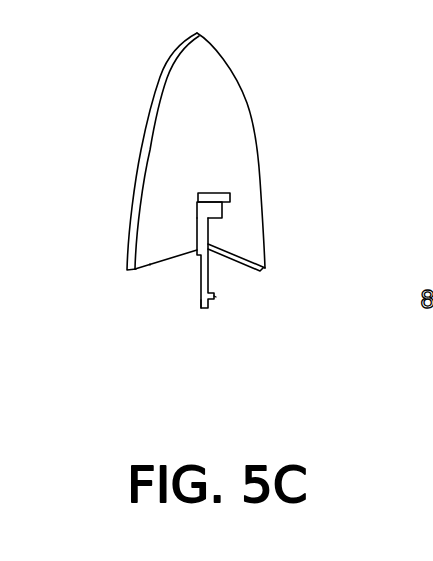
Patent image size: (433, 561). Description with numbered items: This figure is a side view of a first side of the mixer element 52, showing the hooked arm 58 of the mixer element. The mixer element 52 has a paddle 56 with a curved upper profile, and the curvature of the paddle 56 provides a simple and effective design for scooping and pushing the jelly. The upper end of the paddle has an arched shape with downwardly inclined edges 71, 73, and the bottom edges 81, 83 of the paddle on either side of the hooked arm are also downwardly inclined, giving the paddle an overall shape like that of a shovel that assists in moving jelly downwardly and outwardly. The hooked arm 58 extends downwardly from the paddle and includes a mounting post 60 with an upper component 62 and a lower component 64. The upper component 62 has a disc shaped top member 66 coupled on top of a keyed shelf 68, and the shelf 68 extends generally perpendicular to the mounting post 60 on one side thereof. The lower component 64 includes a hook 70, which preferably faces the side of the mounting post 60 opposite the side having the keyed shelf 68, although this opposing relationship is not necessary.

The mixer element 52 is at (214, 145).
The paddle 56 is at (167, 120).
The hooked arm 58 is at (206, 316).
The mounting post 60 is at (208, 268).
The upper component 62 is at (231, 168).
The lower component 64 is at (217, 322).
The disc shaped top member 66 is at (230, 198).
The keyed shelf 68 is at (198, 210).
The hook 70 is at (216, 297).
The downwardly inclined edge 71 is at (139, 160).
The downwardly inclined edge 73 is at (251, 120).
The bottom edge 81 is at (112, 285).
The bottom edge 83 is at (246, 270).